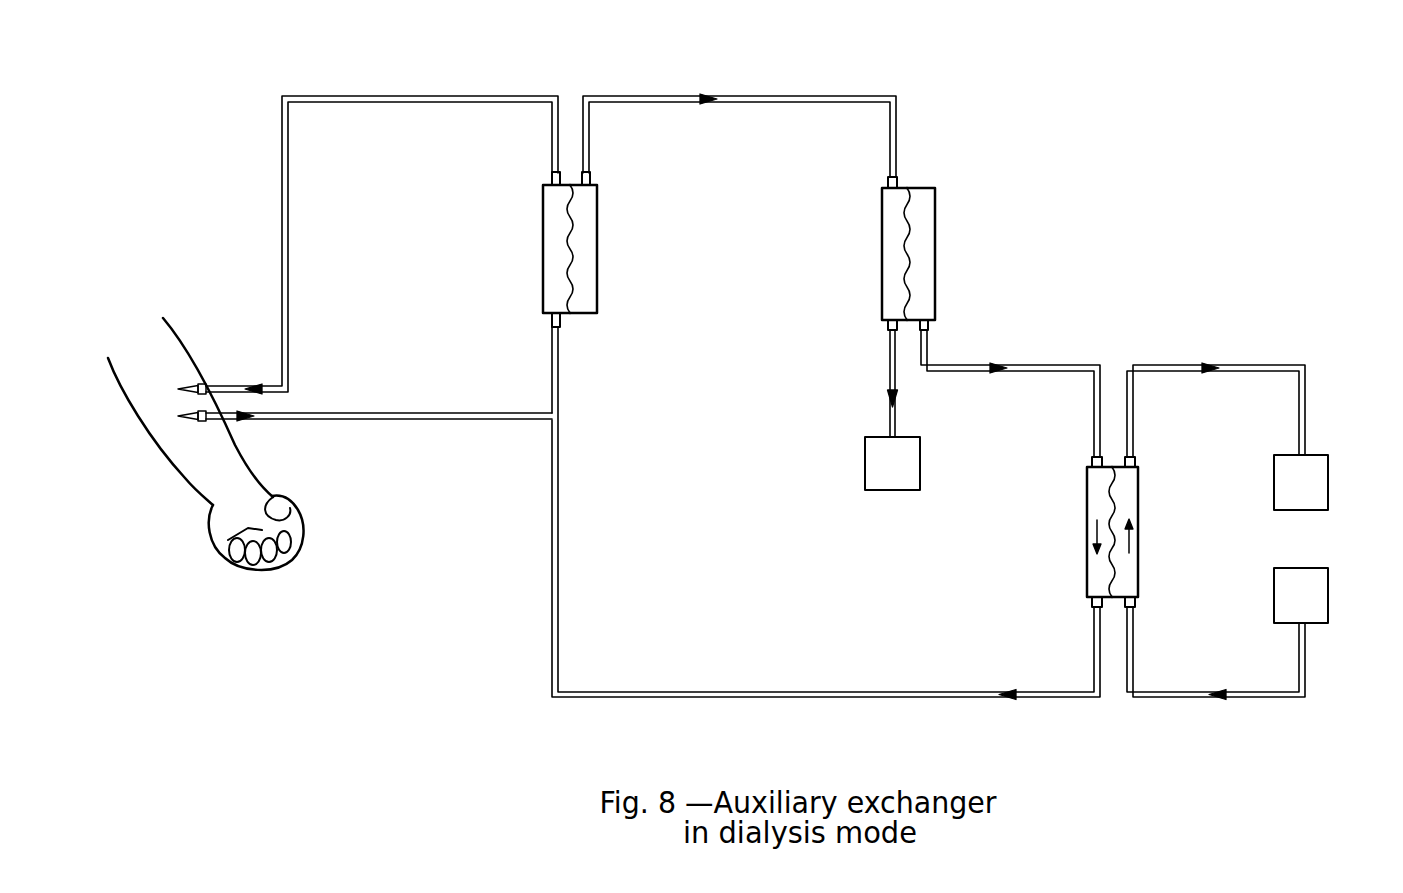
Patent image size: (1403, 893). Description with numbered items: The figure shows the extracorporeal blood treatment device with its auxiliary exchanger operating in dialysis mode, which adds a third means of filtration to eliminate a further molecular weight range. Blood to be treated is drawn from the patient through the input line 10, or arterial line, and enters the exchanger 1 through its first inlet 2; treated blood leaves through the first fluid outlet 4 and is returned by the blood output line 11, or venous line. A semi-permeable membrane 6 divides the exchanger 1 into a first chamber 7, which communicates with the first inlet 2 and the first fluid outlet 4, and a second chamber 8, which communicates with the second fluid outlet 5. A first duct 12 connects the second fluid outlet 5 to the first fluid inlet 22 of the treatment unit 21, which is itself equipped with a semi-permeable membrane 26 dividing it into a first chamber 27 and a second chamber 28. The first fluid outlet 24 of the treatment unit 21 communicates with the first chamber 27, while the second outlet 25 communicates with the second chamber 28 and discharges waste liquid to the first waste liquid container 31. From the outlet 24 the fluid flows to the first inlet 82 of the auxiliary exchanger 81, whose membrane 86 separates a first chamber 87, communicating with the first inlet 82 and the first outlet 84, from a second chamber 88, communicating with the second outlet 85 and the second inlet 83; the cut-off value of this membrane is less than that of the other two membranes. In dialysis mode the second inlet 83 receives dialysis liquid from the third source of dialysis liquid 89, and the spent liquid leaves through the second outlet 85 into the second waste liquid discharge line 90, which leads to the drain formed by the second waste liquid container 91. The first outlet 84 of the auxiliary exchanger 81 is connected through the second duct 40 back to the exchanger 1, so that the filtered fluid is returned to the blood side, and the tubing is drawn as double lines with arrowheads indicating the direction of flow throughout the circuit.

The exchanger 1 is at (540, 239).
The first inlet 2 is at (551, 320).
The first fluid outlet 4 is at (551, 178).
The second fluid outlet 5 is at (591, 178).
The semi-permeable membrane 6 is at (573, 247).
The first chamber 7 is at (556, 256).
The second chamber 8 is at (592, 289).
The input line 10 is at (334, 421).
The blood output line 11 is at (282, 221).
The first duct 12 is at (750, 96).
The treatment unit 21 is at (955, 286).
The first fluid inlet 22 is at (887, 183).
The first fluid outlet 24 is at (930, 328).
The second outlet 25 is at (889, 328).
The semi-permeable membrane 26 is at (905, 252).
The first chamber 27 is at (926, 222).
The second chamber 28 is at (890, 295).
The first waste liquid container 31 is at (865, 476).
The second duct 40 is at (743, 698).
The auxiliary exchanger 81 is at (1088, 503).
The first inlet 82 is at (1093, 460).
The second inlet 83 is at (1136, 604).
The first outlet 84 is at (1091, 604).
The second outlet 85 is at (1137, 460).
The membrane 86 is at (1116, 499).
The first chamber 87 is at (1096, 500).
The second chamber 88 is at (1131, 572).
The third source of dialysis liquid 89 is at (1329, 595).
The second waste liquid discharge line 90 is at (1246, 365).
The second waste liquid container 91 is at (1329, 492).